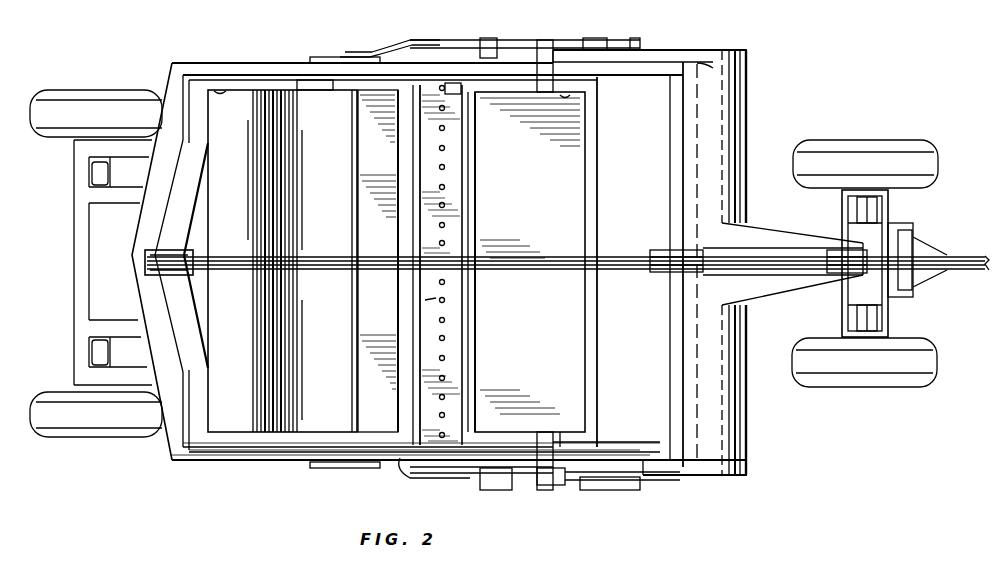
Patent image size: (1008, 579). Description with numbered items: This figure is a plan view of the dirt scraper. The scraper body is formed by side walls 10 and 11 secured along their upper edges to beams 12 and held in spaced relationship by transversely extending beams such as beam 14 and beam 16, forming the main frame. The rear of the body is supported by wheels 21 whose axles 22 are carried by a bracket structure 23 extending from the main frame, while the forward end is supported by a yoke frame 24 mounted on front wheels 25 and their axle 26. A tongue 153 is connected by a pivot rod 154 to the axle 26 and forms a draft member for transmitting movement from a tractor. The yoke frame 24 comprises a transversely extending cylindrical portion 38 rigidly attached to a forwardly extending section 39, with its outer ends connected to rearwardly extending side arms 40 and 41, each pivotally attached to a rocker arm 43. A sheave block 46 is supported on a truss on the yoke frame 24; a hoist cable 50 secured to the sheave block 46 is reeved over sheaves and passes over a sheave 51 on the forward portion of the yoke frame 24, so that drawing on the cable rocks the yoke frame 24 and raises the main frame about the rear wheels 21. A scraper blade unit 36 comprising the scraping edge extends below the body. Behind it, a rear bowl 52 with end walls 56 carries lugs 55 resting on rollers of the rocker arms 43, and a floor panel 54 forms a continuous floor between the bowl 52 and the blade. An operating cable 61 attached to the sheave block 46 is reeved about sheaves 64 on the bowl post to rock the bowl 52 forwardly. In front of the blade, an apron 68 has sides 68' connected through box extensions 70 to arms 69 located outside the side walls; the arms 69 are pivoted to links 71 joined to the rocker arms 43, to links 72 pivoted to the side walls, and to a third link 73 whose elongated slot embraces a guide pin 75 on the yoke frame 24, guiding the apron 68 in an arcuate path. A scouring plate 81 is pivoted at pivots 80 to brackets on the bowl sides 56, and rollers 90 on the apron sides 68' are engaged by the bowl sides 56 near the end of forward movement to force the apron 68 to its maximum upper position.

The side wall 10 is at (245, 70).
The side wall 11 is at (240, 450).
The beams 12 is at (272, 70).
The transversely extending beam 14 is at (142, 303).
The transversely extending beam 16 is at (668, 199).
The wheels 21 is at (116, 80).
The axles 22 is at (98, 350).
The bracket structure 23 is at (70, 252).
The yoke frame 24 is at (752, 384).
The front wheels 25 is at (923, 132).
The axle 26 is at (890, 208).
The scraper blade unit 36 is at (470, 343).
The transversely extending cylindrical portion 38 is at (740, 125).
The forwardly extending section 39 is at (786, 242).
The side arm 40 is at (680, 58).
The side arm 41 is at (683, 470).
The rocker arm 43 is at (328, 57).
The sheave block 46 is at (665, 250).
The hoist cable 50 is at (940, 276).
The sheave 51 is at (845, 276).
The rear bowl 52 is at (238, 458).
The floor panel 54 is at (398, 55).
The lugs 55 is at (412, 303).
The end walls 56 is at (220, 90).
The operating cable 61 is at (562, 258).
The sheaves 64 is at (156, 250).
The apron 68 is at (547, 262).
The sides 68' is at (636, 83).
The arms 69 is at (540, 48).
The box extensions 70 is at (560, 50).
The links 71 is at (428, 480).
The links 72 is at (462, 474).
The third link 73 is at (582, 482).
The guide pin 75 is at (610, 490).
The pivots 80 is at (314, 88).
The scouring plate 81 is at (355, 211).
The rollers 90 is at (452, 94).
The tongue 153 is at (982, 254).
The pivot rod 154 is at (905, 226).